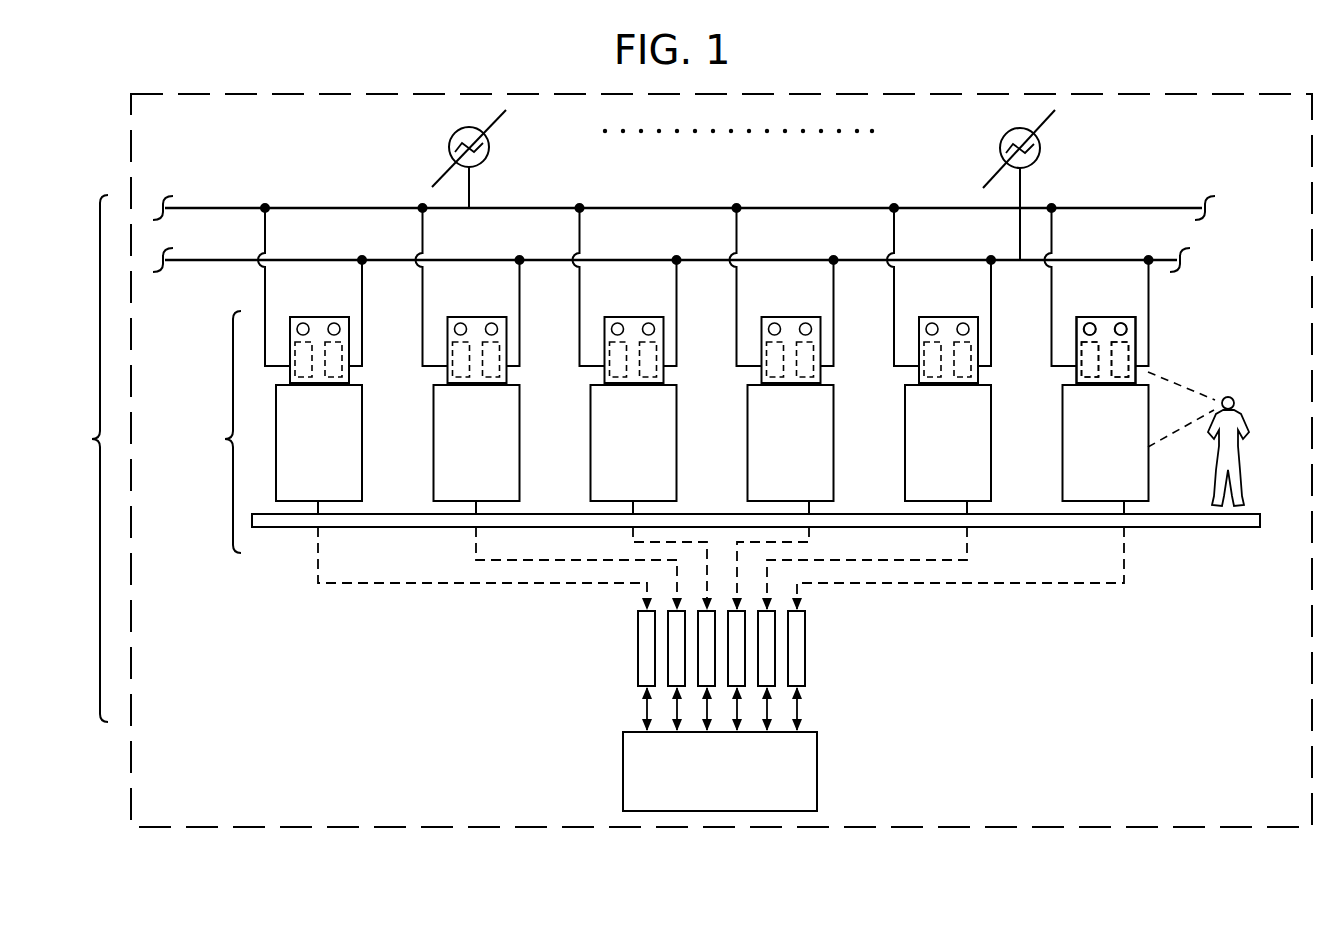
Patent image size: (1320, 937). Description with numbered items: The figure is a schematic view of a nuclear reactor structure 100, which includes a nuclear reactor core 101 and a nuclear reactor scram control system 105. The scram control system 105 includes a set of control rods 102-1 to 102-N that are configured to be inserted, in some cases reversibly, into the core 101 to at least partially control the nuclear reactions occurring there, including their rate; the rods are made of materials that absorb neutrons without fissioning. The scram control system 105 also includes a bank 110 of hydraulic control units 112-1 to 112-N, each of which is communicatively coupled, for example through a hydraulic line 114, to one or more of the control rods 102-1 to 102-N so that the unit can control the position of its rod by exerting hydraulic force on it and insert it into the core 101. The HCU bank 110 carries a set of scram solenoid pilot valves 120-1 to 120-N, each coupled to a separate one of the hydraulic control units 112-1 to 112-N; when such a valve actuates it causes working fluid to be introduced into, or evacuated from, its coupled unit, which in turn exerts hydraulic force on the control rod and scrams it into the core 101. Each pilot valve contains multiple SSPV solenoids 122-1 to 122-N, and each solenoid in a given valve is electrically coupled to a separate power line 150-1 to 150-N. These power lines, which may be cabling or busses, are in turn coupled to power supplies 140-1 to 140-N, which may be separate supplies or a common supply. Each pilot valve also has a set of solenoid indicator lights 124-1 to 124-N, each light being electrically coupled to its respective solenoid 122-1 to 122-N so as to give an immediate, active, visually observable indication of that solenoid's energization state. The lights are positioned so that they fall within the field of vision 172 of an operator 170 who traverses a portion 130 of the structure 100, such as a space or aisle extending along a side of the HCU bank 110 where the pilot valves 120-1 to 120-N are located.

The nuclear reactor structure 100 is at (198, 139).
The nuclear reactor core 101 is at (728, 788).
The control rod 102-1 is at (813, 657).
The control rod 102-N is at (796, 670).
The nuclear reactor scram control system 105 is at (75, 458).
The HCU bank 110 is at (208, 432).
The hydraulic control unit 112-1 is at (340, 457).
The hydraulic control unit 112-N is at (1137, 457).
The hydraulic line 114 is at (1131, 559).
The scram solenoid pilot valve 120-1 is at (1140, 316).
The scram solenoid pilot valve 120-N is at (319, 350).
The SSPV solenoid 122-1 is at (1087, 357).
The SSPV solenoid 122-N is at (1112, 361).
The solenoid indicator light 124-1 is at (1090, 318).
The solenoid indicator light 124-N is at (1120, 318).
The portion of the nuclear reactor structure 130 is at (1220, 530).
The power supply 140-1 is at (499, 142).
The power supply 140-N is at (995, 139).
The power line 150-1 is at (204, 206).
The power line 150-N is at (216, 264).
The operator 170 is at (1253, 426).
The field of vision 172 is at (1197, 428).